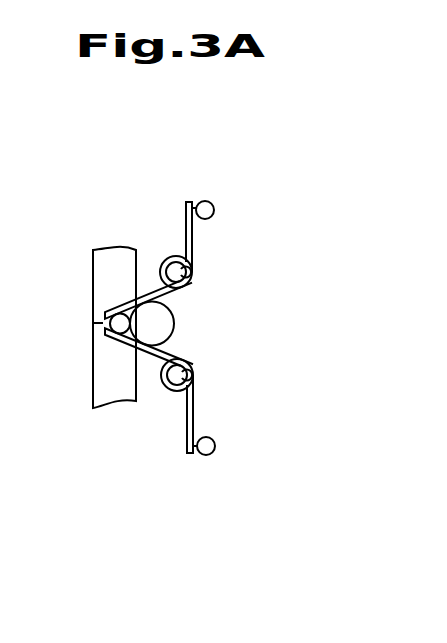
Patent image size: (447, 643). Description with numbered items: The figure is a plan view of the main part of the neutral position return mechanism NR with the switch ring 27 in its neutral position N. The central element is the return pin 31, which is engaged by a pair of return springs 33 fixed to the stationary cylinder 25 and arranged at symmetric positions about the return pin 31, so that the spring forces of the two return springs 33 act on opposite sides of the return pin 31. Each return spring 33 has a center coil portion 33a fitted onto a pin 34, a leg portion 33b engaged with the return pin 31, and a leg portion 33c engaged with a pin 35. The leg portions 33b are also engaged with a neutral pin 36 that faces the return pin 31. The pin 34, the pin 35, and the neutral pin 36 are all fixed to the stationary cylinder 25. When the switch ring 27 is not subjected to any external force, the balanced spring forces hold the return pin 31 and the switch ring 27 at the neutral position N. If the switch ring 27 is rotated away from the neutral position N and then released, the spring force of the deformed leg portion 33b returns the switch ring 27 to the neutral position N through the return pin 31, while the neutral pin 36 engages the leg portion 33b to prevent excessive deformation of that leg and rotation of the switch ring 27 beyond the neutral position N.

The neutral position return mechanism NR is at (218, 157).
The switch ring 27 is at (93, 371).
The neutral position N is at (79, 326).
The return pin 31 is at (100, 318).
The stationary cylinder 25 is at (228, 334).
The neutral pin 36 is at (174, 313).
The pin 34 is at (192, 270).
The pin 35 is at (215, 203).
The return spring 33 is at (184, 336).
The center coil portion 33a is at (168, 258).
The leg portion 33b is at (106, 309).
The leg portion 33c is at (193, 240).